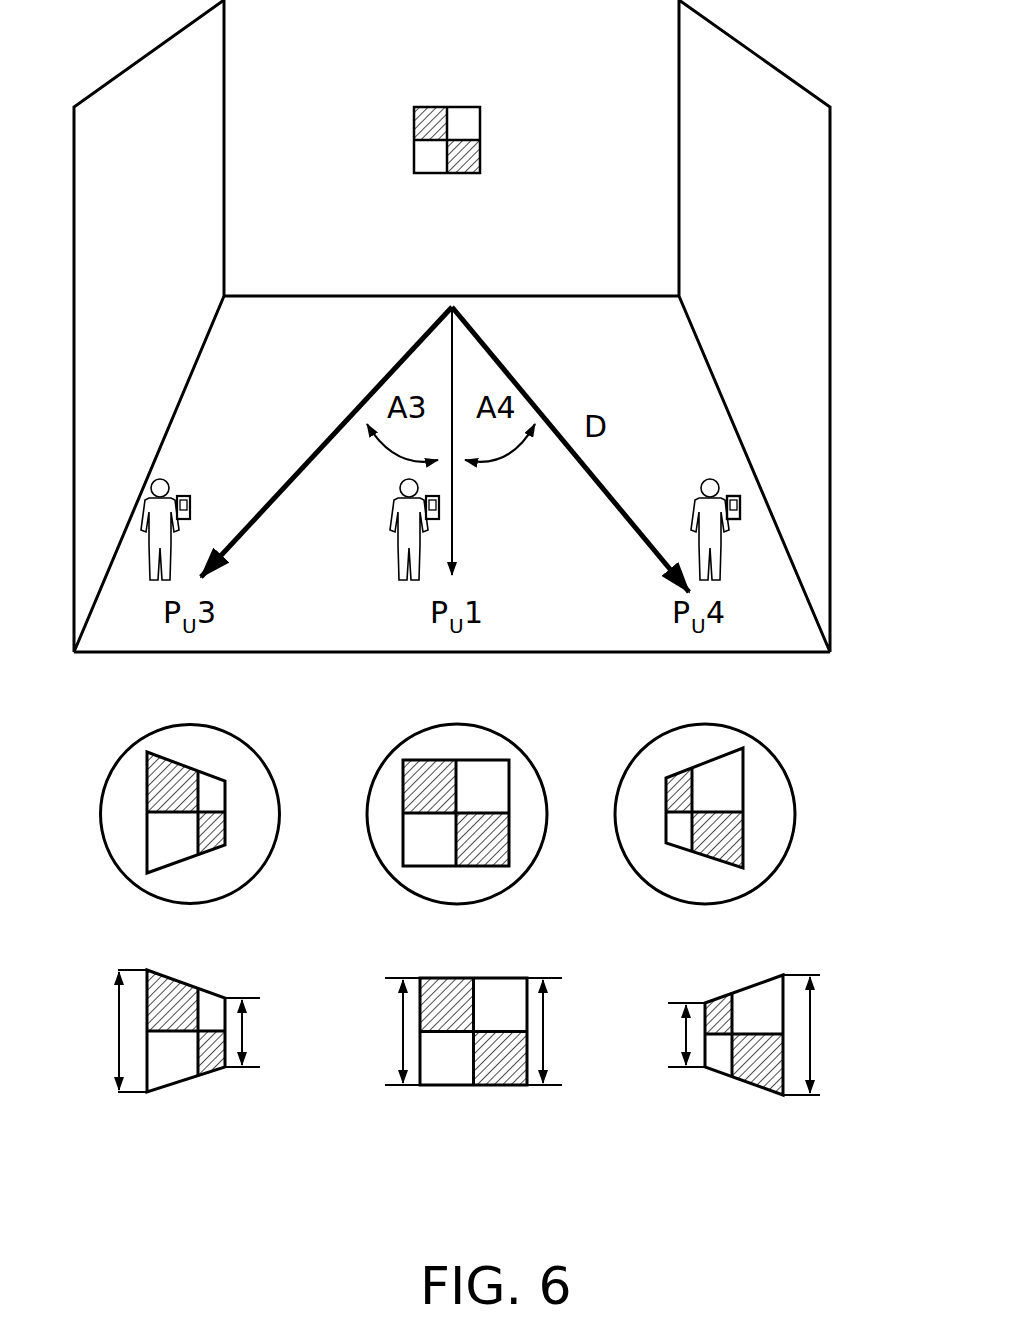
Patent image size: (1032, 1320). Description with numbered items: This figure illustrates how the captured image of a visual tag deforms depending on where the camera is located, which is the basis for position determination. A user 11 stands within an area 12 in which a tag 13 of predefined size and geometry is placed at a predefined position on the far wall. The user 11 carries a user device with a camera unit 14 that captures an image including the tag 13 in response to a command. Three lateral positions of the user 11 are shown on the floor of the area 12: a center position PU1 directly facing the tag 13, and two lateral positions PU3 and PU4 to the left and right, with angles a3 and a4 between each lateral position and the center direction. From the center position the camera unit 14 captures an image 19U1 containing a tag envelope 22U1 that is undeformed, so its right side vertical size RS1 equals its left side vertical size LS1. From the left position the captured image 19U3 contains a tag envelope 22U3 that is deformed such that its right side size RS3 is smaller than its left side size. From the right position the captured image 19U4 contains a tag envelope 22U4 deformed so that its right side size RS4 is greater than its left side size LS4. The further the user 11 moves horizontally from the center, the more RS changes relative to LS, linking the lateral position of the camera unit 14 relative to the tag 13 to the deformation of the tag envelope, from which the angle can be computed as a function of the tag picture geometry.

The user 11 is at (728, 580).
The area 12 is at (832, 604).
The tag 13 is at (470, 174).
The camera unit 14 is at (732, 497).
The image captured from position PU3 19U3 is at (272, 864).
The image captured from position PU1 19U1 is at (529, 876).
The image captured from position PU4 19U4 is at (779, 876).
The tag envelope in image from position PU3 22U3 is at (189, 1116).
The tag envelope in image from position PU1 22U1 is at (464, 1130).
The tag envelope in image from position PU4 22U4 is at (730, 1130).